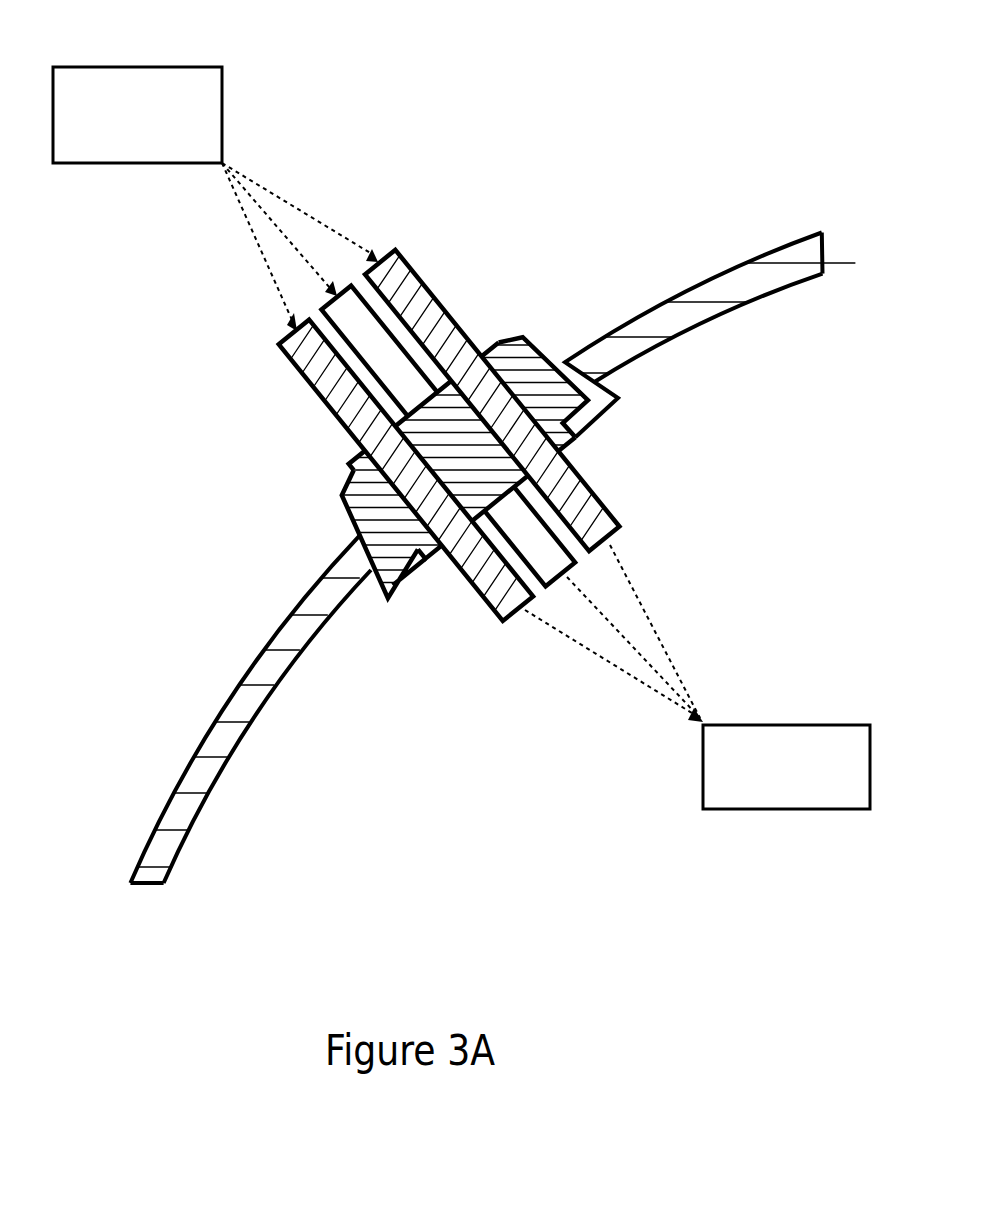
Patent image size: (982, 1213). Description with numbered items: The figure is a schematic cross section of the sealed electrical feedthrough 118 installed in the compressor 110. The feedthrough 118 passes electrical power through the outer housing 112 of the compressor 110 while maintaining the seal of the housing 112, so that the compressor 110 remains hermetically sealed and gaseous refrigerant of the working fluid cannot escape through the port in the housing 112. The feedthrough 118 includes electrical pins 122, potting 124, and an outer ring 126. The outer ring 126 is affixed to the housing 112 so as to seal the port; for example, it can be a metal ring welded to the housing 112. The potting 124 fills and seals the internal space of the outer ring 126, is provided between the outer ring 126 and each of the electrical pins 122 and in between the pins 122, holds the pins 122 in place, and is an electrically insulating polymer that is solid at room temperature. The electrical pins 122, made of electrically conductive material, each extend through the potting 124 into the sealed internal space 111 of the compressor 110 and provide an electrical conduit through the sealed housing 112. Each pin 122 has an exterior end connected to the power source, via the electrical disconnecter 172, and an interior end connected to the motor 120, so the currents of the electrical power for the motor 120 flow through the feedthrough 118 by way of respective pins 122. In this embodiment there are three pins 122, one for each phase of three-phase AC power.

The compressor 110 is at (414, 156).
The sealed internal space 111 is at (338, 678).
The outer housing 112 is at (208, 722).
The sealed electrical feedthrough 118 is at (346, 470).
The motor 120 is at (703, 790).
The electrical pins 122 is at (383, 458).
The potting 124 is at (498, 340).
The outer ring 126 is at (389, 592).
The electrical disconnecter 172 is at (186, 66).